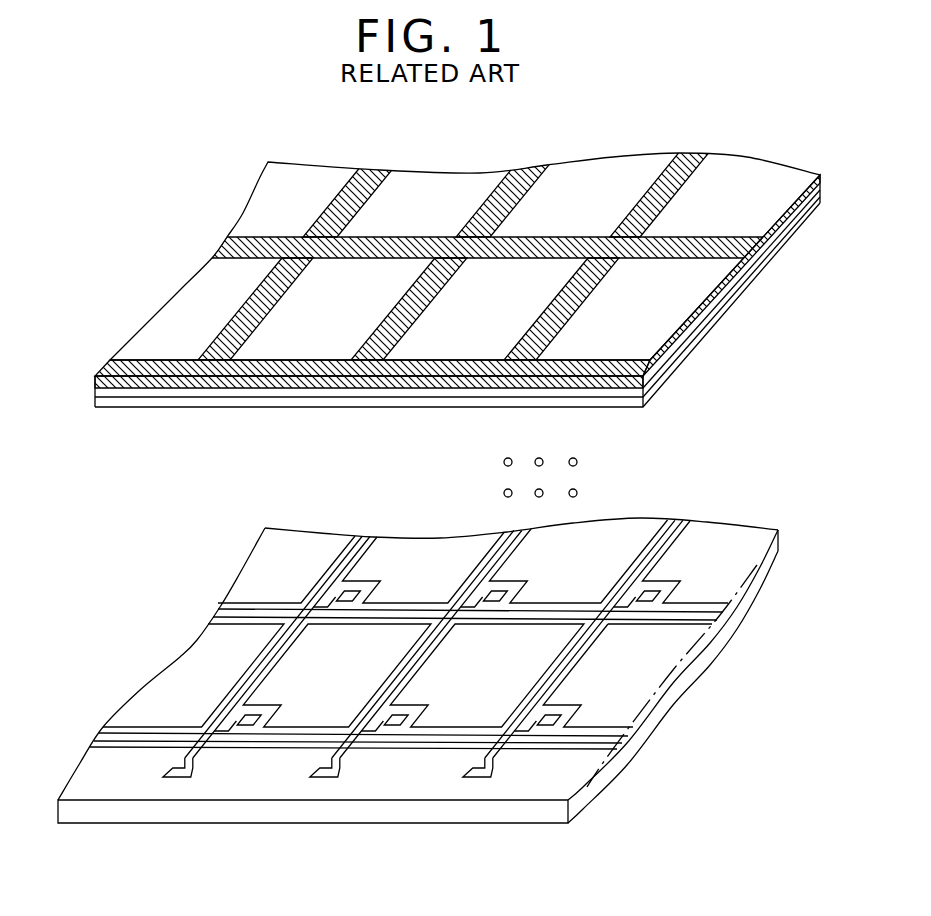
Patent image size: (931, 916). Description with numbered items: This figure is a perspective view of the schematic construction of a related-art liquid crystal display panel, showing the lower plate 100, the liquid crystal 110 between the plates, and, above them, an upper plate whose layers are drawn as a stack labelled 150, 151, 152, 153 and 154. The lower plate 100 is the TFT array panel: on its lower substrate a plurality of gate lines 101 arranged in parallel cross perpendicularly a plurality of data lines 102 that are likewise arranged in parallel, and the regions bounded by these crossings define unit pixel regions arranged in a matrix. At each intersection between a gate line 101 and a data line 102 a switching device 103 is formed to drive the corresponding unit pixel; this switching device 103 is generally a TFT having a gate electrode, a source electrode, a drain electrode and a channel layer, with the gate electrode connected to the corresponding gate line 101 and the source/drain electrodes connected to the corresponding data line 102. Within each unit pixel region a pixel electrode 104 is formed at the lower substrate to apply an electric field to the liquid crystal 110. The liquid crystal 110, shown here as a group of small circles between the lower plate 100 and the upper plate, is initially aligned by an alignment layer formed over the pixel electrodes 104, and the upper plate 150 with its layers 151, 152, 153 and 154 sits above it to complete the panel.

The color filter substrate 150 is at (178, 268).
The black matrix 151 is at (653, 370).
The color filter layer 152 is at (690, 290).
The overcoat layer 153 is at (620, 392).
The common electrode 154 is at (607, 402).
The liquid crystal 110 is at (503, 461).
The lower plate 100 is at (135, 655).
The gate line 101 is at (602, 737).
The data line 102 is at (562, 675).
The switching device 103 is at (547, 748).
The pixel electrode 104 is at (637, 658).